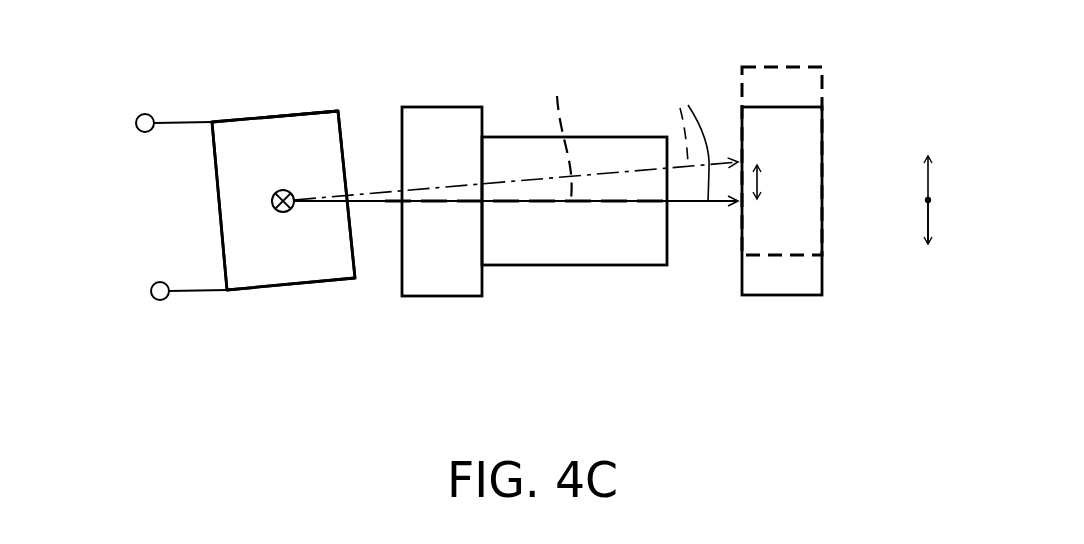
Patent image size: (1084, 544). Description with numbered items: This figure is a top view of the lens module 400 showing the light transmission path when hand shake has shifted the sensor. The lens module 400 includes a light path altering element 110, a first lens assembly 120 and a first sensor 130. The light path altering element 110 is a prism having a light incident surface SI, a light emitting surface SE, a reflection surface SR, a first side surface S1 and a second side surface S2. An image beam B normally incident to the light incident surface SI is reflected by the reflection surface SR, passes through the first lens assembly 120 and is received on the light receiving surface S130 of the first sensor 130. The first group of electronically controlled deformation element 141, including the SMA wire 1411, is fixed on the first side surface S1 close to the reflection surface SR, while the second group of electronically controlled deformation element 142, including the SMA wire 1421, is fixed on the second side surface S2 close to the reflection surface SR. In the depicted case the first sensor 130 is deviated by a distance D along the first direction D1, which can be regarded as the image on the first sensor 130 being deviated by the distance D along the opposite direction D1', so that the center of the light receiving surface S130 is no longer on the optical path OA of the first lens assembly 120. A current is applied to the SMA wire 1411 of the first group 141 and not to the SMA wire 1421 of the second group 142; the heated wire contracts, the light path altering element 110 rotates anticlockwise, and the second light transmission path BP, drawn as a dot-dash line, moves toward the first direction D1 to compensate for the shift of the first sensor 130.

The lens module 400 is at (878, 397).
The light path altering element 110 is at (303, 288).
The first lens assembly 120 is at (600, 267).
The first sensor 130 is at (823, 177).
The SMA wire 1411 is at (131, 95).
The first group of electronically controlled deformation element 141 is at (198, 121).
The SMA wire 1421 is at (139, 264).
The second group of electronically controlled deformation element 142 is at (197, 289).
The first side surface S1 is at (228, 120).
The second side surface S2 is at (245, 294).
The light incident surface SI is at (292, 126).
The light emitting surface SE is at (345, 142).
The reflection surface SR is at (213, 173).
The image beam B is at (282, 213).
The optical path OA is at (516, 128).
The second light transmission path BP is at (516, 132).
The light receiving surface S130 is at (739, 119).
The distance D is at (772, 183).
The first direction D1 is at (928, 178).
The opposite direction D1' is at (932, 243).